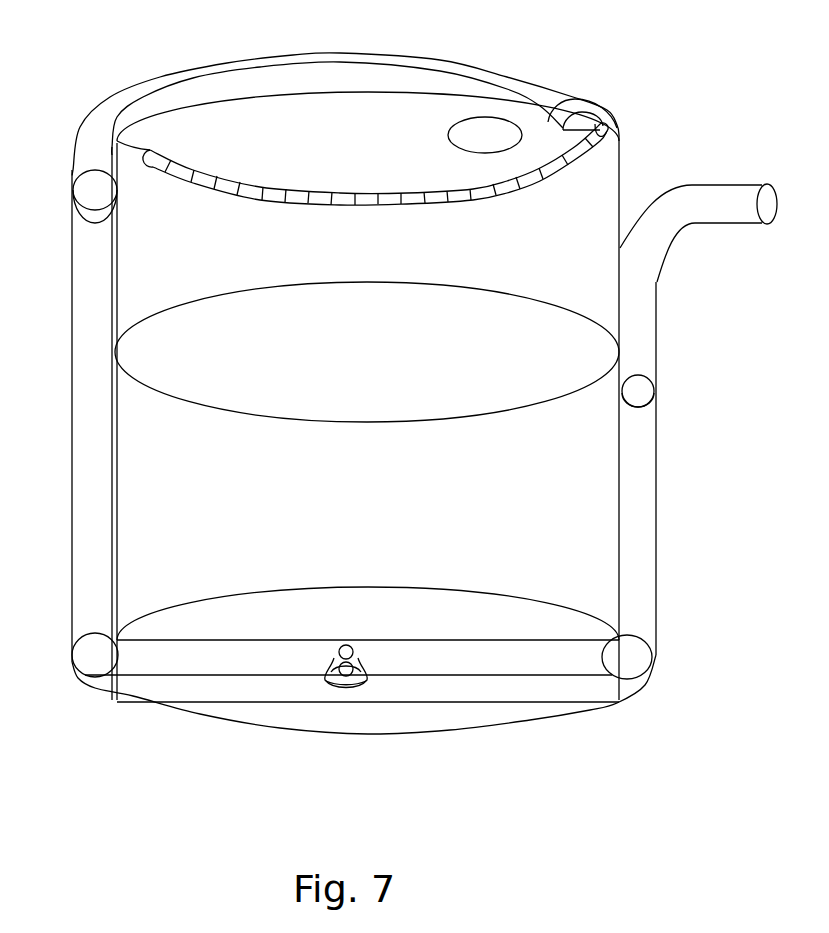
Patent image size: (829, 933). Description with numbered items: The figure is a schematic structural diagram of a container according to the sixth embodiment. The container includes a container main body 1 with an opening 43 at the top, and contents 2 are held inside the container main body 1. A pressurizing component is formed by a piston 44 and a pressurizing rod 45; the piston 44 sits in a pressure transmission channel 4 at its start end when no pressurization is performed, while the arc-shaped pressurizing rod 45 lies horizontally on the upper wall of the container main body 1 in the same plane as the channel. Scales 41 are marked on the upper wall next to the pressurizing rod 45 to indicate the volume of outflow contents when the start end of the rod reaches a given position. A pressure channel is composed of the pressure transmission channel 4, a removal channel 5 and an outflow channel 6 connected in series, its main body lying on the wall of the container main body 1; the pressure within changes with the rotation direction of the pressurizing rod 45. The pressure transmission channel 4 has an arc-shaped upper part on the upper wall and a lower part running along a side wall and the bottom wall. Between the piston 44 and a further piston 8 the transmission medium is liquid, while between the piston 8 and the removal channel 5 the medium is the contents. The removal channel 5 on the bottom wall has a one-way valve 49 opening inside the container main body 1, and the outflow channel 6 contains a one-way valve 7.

The container main body 1 is at (412, 396).
The contents 2 is at (427, 402).
The pressure transmission channel 4 is at (311, 351).
The removal channel 5 is at (364, 680).
The outflow channel 6 is at (698, 419).
The one-way valve 7 is at (677, 363).
The piston 8 is at (67, 170).
The scales 41 is at (375, 181).
The opening 43 is at (517, 80).
The piston 44 is at (603, 86).
The pressurizing rod 45 is at (379, 159).
The one-way valve 49 is at (377, 711).